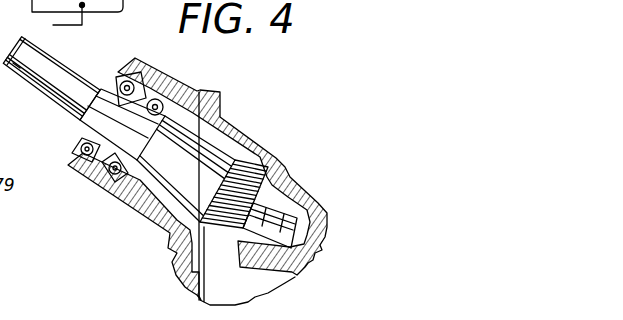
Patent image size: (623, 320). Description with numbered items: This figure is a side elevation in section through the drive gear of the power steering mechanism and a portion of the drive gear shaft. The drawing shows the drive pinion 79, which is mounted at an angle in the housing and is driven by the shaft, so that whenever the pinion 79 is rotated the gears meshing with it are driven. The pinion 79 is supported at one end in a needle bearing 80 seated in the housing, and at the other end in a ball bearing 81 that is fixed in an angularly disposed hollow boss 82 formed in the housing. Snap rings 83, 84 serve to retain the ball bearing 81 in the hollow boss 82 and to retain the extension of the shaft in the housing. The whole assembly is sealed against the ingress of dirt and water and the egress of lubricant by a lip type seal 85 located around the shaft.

The drive pinion 79 is at (255, 162).
The needle bearing 80 is at (300, 196).
The ball bearing 81 is at (116, 178).
The hollow boss 82 is at (173, 92).
The snap ring 83 is at (95, 175).
The snap ring 84 is at (126, 76).
The lip type seal 85 is at (79, 142).